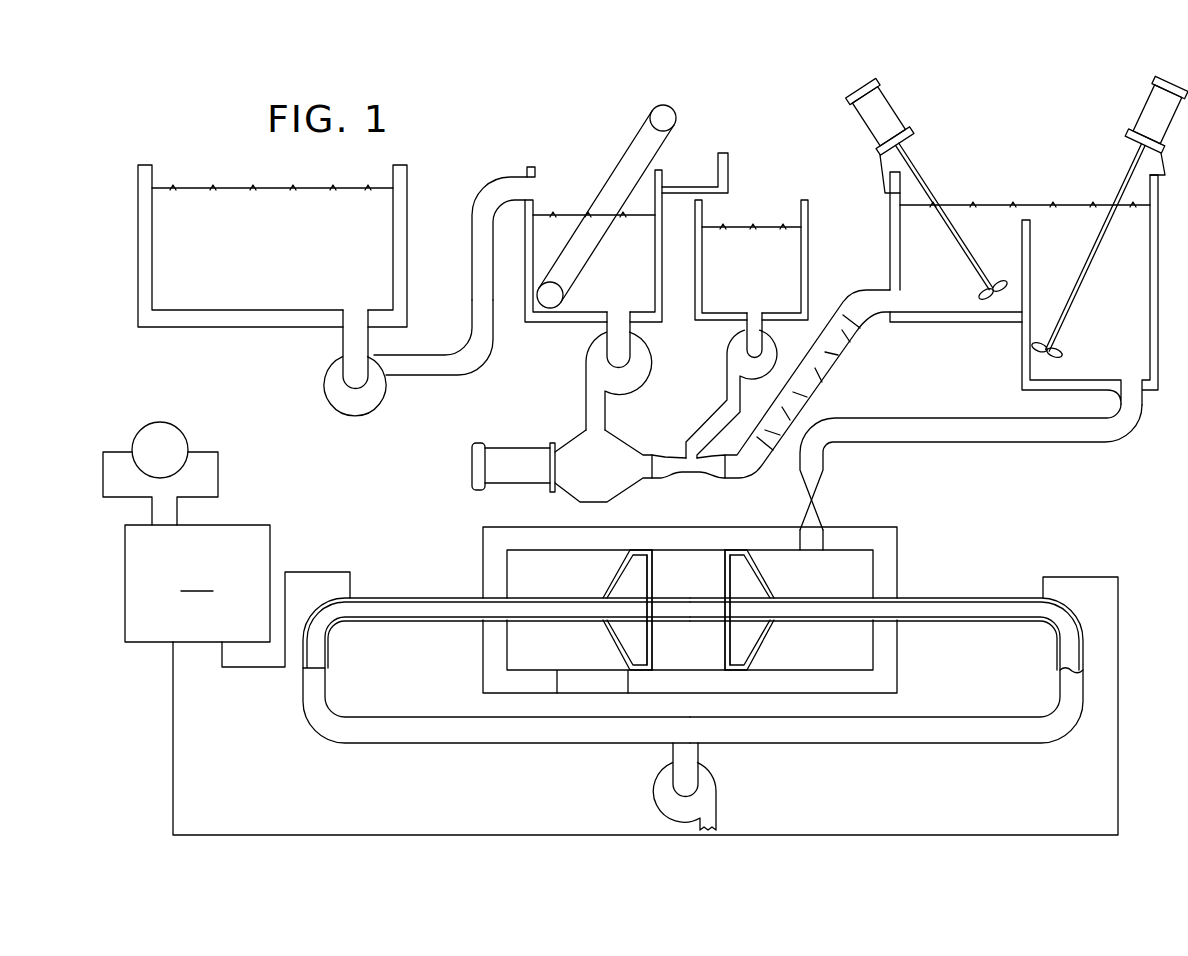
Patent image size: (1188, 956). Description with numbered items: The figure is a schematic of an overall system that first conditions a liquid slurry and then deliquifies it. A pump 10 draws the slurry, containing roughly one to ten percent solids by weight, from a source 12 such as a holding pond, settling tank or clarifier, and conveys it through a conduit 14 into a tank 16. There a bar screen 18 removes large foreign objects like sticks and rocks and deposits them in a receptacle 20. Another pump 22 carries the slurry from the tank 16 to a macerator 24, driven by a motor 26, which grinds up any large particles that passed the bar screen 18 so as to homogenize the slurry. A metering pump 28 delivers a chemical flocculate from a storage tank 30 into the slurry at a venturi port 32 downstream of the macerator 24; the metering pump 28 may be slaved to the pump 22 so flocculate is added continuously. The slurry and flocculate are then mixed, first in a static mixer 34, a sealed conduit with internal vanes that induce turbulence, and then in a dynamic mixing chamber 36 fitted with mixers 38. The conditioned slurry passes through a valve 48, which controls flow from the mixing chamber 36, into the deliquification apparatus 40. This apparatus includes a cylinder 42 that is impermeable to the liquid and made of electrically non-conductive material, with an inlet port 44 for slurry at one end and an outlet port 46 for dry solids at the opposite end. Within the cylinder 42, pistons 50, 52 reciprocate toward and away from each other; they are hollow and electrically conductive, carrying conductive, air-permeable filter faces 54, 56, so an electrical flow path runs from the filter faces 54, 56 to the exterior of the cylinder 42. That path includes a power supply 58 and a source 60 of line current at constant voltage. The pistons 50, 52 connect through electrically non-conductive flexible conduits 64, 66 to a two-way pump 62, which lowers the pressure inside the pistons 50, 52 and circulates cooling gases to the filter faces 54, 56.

The pump 10 is at (358, 415).
The source 12 is at (158, 170).
The conduit 14 is at (467, 340).
The tank 16 is at (526, 167).
The bar screen 18 is at (622, 150).
The receptacle 20 is at (718, 157).
The pump 22 is at (587, 355).
The macerator 24 is at (577, 437).
The motor 26 is at (481, 444).
The metering pump 28 is at (727, 352).
The storage tank 30 is at (748, 200).
The venturi port 32 is at (672, 455).
The static mixer 34 is at (843, 360).
The dynamic mixing chamber 36 is at (1018, 325).
The mixers 38 is at (927, 183).
The deliquification apparatus 40 is at (723, 581).
The cylinder 42 is at (898, 551).
The inlet port 44 is at (813, 543).
The outlet port 46 is at (583, 680).
The valve 48 is at (813, 504).
The piston 50 is at (616, 574).
The piston 52 is at (771, 637).
The filter face 54 is at (657, 582).
The filter face 56 is at (721, 652).
The power supply 58 is at (197, 583).
The source of line current 60 is at (189, 440).
The two-way pump 62 is at (716, 781).
The flexible conduit 64 is at (377, 743).
The flexible conduit 66 is at (945, 744).